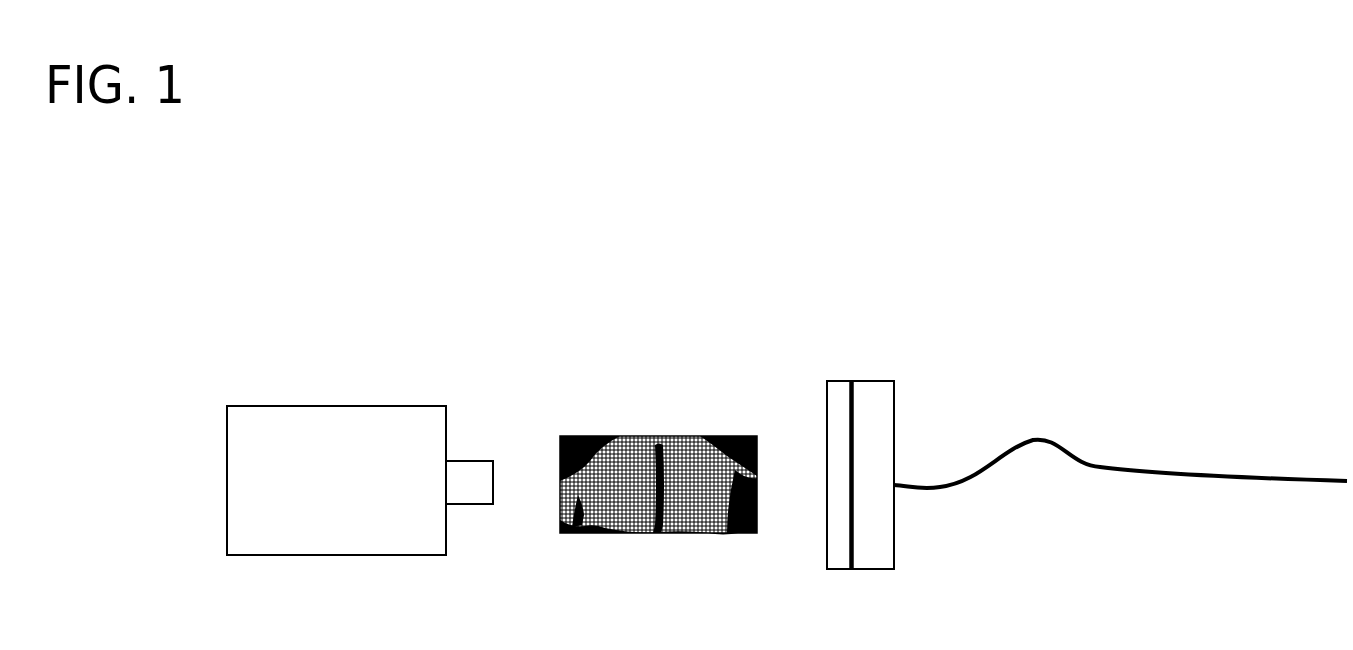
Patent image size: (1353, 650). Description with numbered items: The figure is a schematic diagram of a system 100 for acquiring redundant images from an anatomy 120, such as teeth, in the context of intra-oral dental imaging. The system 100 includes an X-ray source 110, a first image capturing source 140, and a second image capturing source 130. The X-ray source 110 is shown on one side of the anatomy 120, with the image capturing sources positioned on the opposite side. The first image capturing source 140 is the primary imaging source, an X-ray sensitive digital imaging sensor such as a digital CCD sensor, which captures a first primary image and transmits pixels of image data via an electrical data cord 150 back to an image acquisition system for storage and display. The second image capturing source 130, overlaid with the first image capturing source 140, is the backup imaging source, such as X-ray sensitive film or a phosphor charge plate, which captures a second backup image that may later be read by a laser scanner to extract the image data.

The system 100 is at (118, 266).
The X-ray source 110 is at (348, 498).
The anatomy 120 is at (628, 437).
The second image capturing source 130 is at (833, 381).
The first image capturing source 140 is at (872, 569).
The cord 150 is at (1031, 437).